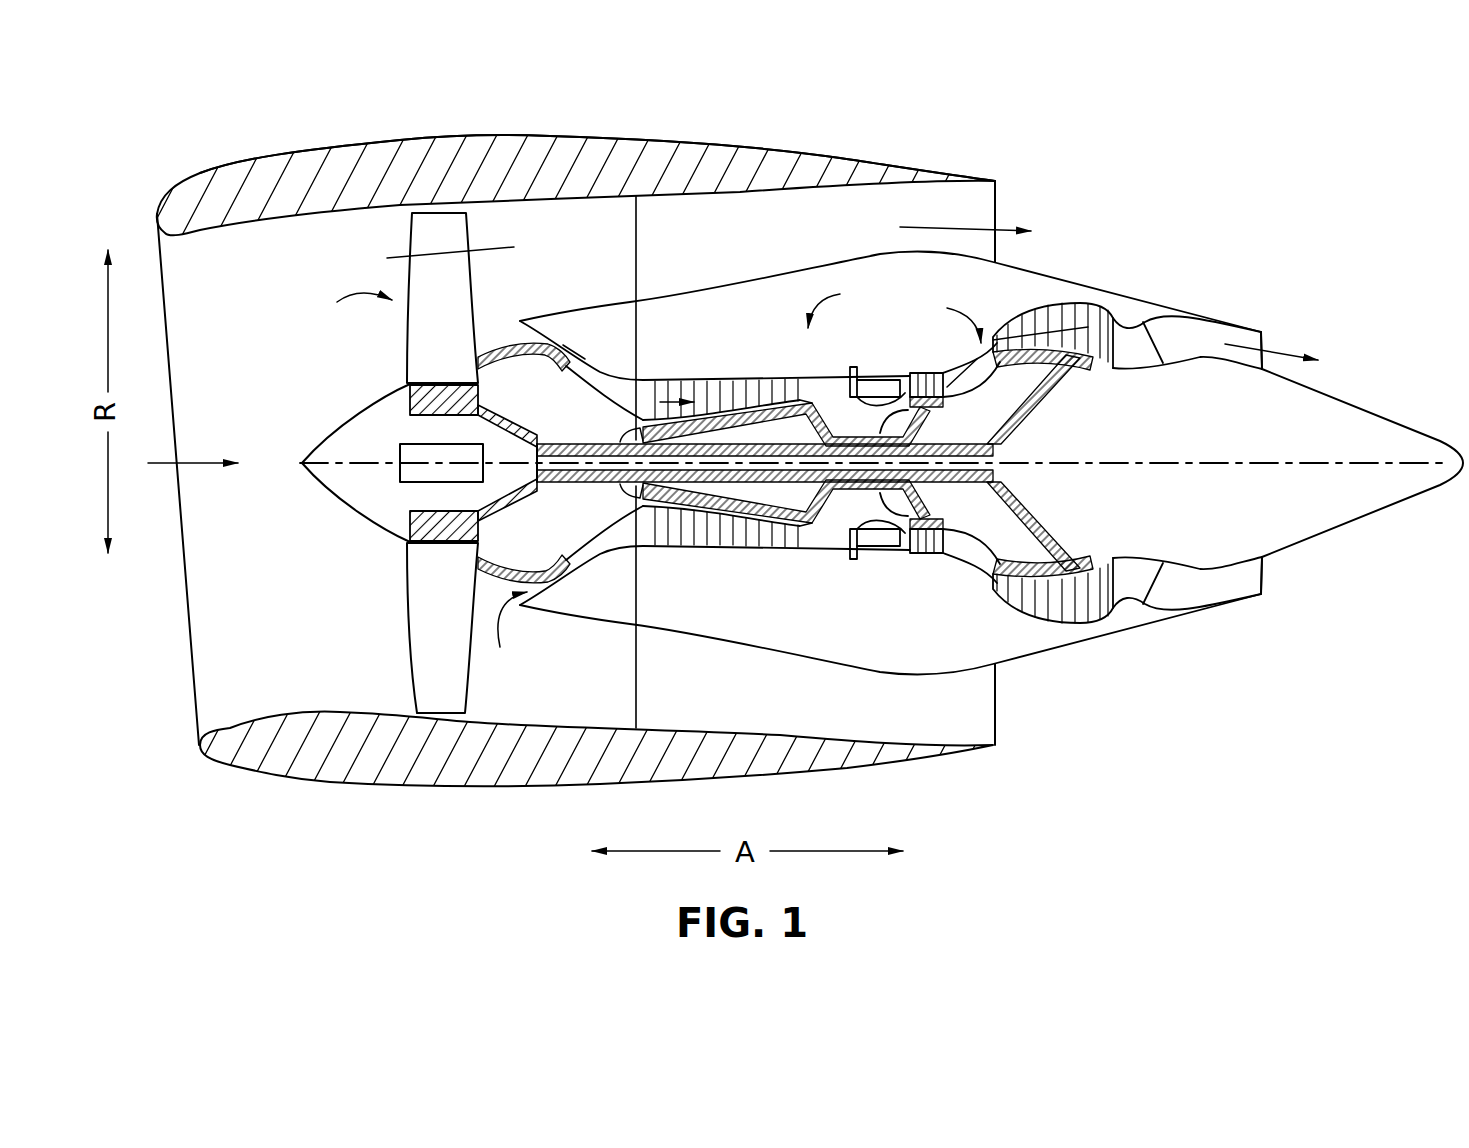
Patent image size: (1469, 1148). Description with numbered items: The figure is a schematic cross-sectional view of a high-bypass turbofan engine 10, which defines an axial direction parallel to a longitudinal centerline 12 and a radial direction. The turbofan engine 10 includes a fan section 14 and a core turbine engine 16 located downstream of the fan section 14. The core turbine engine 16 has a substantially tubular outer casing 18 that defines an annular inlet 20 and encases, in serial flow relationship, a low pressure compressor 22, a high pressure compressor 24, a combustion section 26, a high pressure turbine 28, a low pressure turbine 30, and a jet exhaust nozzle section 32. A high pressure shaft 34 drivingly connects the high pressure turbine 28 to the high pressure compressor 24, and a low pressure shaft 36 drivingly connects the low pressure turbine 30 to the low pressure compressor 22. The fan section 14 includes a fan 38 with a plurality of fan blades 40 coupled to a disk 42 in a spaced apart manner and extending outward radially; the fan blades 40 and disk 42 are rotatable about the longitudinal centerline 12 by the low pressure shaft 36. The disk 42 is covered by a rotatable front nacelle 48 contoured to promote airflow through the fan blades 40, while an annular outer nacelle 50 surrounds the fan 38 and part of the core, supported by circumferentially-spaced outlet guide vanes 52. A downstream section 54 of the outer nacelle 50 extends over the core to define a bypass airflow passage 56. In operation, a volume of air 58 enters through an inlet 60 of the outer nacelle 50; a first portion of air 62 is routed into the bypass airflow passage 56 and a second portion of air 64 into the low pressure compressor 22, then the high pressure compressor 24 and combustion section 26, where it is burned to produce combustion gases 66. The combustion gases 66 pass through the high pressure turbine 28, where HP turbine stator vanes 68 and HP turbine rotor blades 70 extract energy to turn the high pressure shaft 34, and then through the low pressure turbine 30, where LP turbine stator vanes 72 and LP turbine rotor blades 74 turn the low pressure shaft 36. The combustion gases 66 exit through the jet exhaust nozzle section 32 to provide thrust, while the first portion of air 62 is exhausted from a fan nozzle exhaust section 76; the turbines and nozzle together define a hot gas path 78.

The turbofan engine 10 is at (1252, 207).
The longitudinal centerline 12 is at (1181, 442).
The fan section 14 is at (491, 130).
The core turbine engine 16 is at (776, 350).
The outer casing 18 is at (838, 658).
The annular inlet 20 is at (513, 632).
The low pressure compressor 22 is at (590, 556).
The high pressure compressor 24 is at (670, 540).
The combustion section 26 is at (870, 542).
The high pressure turbine 28 is at (952, 540).
The low pressure turbine 30 is at (1097, 630).
The jet exhaust nozzle section 32 is at (1271, 336).
The high pressure shaft 34 is at (918, 408).
The low pressure shaft 36 is at (590, 440).
The fan 38 is at (386, 298).
The fan blades 40 is at (406, 656).
The disk 42 is at (408, 387).
The rotatable front nacelle 48 is at (327, 432).
The outer nacelle 50 is at (477, 788).
The outlet guide vanes 52 is at (638, 222).
The downstream section of the nacelle 54 is at (804, 150).
The bypass airflow passage 56 is at (788, 244).
The volume of air 58 is at (192, 460).
The inlet 60 is at (192, 700).
The first portion of air 62 is at (420, 255).
The second portion of air 64 is at (499, 334).
The combustion gases 66 is at (1043, 318).
The HP turbine stator vanes 68 is at (913, 552).
The HP turbine rotor blades 70 is at (927, 548).
The LP turbine stator vanes 72 is at (1003, 584).
The LP turbine rotor blades 74 is at (1015, 598).
The fan nozzle exhaust section 76 is at (997, 204).
The hot gas path 78 is at (952, 343).